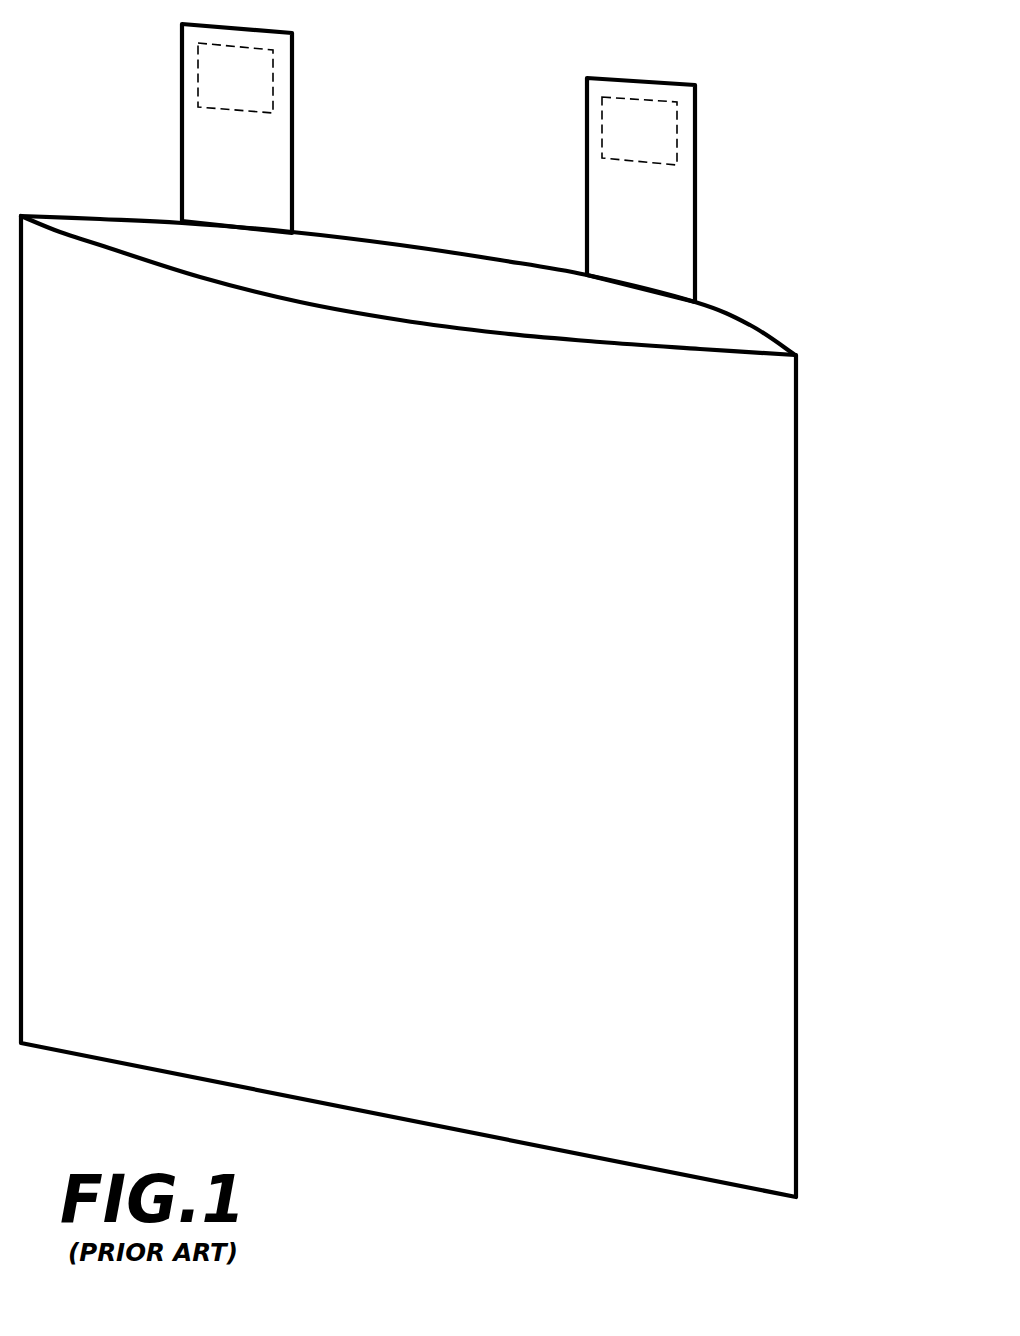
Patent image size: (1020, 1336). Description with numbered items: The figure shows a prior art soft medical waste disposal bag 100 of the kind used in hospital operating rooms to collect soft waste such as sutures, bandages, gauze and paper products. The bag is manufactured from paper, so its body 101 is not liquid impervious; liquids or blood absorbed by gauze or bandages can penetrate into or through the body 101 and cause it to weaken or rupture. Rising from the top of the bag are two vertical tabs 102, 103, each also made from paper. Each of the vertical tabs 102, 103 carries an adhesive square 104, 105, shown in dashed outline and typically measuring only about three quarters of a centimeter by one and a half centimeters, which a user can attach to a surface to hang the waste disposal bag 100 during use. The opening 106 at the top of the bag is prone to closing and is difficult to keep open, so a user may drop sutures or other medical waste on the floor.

The prior art waste disposal bag 100 is at (855, 507).
The body 101 is at (640, 720).
The vertical tab 102 is at (213, 155).
The vertical tab 103 is at (642, 223).
The adhesive square 104 is at (247, 78).
The adhesive square 105 is at (642, 130).
The opening 106 is at (418, 282).